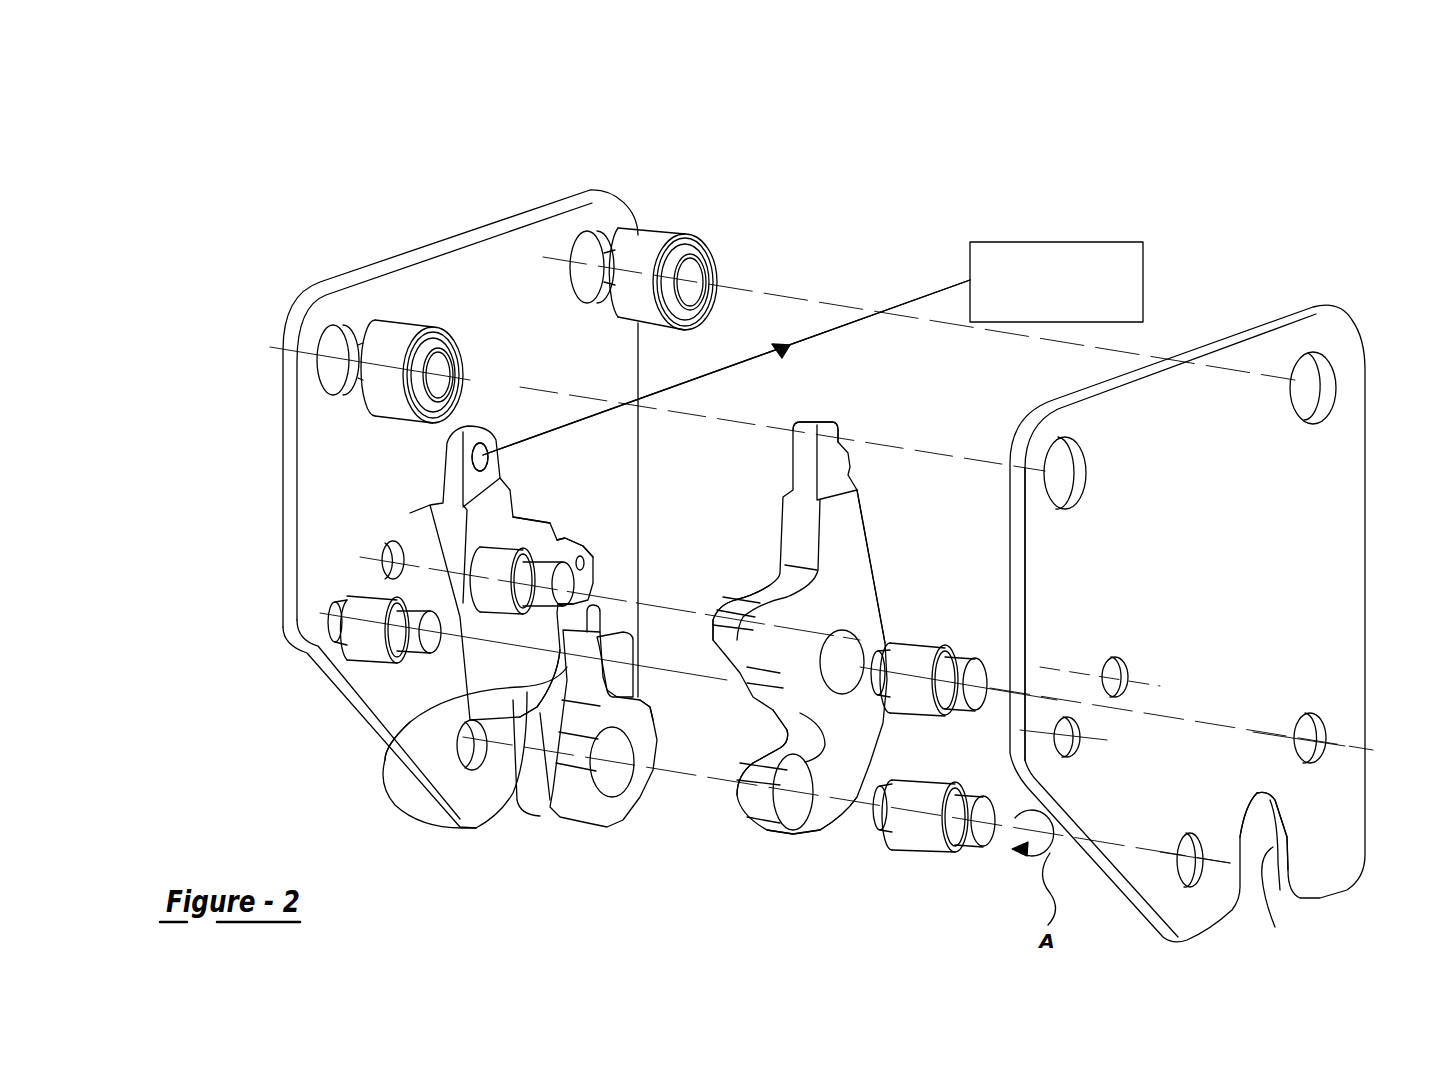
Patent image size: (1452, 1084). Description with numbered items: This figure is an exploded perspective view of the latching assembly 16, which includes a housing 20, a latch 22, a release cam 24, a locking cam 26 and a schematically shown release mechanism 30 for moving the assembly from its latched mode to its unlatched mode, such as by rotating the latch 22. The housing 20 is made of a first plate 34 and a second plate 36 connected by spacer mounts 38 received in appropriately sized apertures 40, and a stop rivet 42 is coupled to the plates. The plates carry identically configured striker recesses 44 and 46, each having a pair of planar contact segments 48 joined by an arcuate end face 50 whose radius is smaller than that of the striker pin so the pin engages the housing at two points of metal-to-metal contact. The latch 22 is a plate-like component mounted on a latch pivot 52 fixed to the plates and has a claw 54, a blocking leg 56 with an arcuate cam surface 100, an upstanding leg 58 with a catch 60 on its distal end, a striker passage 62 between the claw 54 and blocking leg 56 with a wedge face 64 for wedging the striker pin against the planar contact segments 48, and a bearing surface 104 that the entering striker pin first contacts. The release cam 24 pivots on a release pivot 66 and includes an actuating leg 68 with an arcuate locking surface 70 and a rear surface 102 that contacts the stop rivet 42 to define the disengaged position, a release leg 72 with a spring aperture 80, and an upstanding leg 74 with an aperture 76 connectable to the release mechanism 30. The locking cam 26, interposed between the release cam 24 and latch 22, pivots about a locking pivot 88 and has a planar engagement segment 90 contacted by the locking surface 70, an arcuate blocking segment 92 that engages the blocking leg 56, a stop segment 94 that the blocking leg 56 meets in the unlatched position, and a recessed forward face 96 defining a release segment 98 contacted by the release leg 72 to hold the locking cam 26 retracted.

The latching assembly 16 is at (978, 140).
The housing 20 is at (1225, 586).
The latch 22 is at (874, 553).
The release cam 24 is at (413, 512).
The locking cam 26 is at (603, 822).
The release mechanism 30 is at (1068, 242).
The first plate 34 is at (1211, 567).
The second plate 36 is at (497, 257).
The spacer mounts 38 is at (653, 237).
The apertures 40 is at (1333, 370).
The stop rivet 42 is at (370, 640).
The striker recess 44 is at (1275, 927).
The striker recess 46 is at (527, 807).
The planar contact segments 48 is at (1265, 798).
The arcuate end face 50 is at (1257, 793).
The latch pivot 52 is at (912, 660).
The claw 54 is at (820, 787).
The blocking leg 56 is at (778, 644).
The upstanding leg 58 is at (831, 559).
The catch 60 is at (843, 437).
The striker passage 62 is at (757, 748).
The wedge face 64 is at (800, 818).
The release pivot 66 is at (500, 563).
The actuating leg 68 is at (490, 674).
The arcuate locking surface 70 is at (463, 672).
The release leg 72 is at (555, 540).
The upstanding leg 74 is at (475, 537).
The aperture 76 is at (483, 455).
The spring aperture 80 is at (590, 560).
The locking pivot 88 is at (924, 833).
The engagement segment 90 is at (522, 747).
The arcuate blocking segment 92 is at (598, 640).
The stop segment 94 is at (650, 707).
The recessed forward face 96 is at (617, 650).
The release segment 98 is at (580, 628).
The arcuate cam surface 100 is at (757, 668).
The rear surface 102 is at (440, 720).
The bearing surface 104 is at (790, 710).